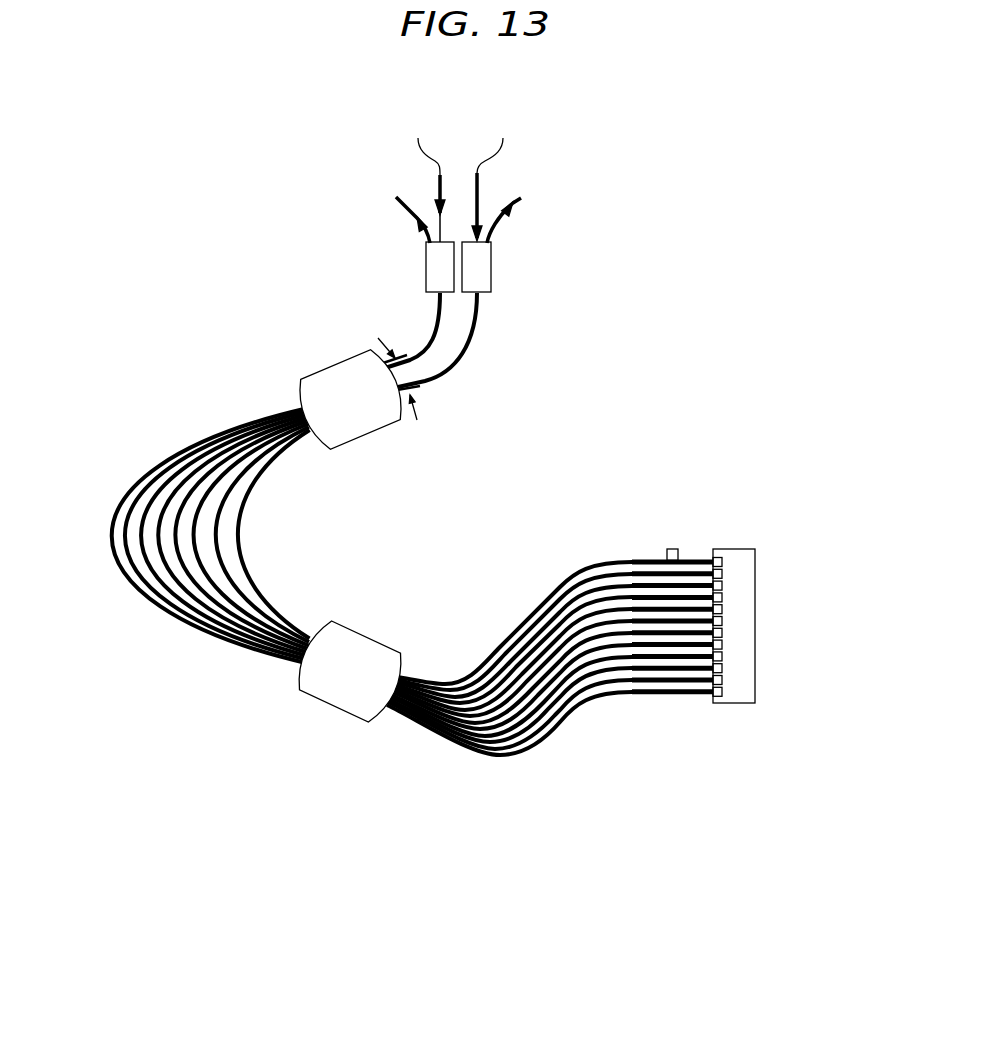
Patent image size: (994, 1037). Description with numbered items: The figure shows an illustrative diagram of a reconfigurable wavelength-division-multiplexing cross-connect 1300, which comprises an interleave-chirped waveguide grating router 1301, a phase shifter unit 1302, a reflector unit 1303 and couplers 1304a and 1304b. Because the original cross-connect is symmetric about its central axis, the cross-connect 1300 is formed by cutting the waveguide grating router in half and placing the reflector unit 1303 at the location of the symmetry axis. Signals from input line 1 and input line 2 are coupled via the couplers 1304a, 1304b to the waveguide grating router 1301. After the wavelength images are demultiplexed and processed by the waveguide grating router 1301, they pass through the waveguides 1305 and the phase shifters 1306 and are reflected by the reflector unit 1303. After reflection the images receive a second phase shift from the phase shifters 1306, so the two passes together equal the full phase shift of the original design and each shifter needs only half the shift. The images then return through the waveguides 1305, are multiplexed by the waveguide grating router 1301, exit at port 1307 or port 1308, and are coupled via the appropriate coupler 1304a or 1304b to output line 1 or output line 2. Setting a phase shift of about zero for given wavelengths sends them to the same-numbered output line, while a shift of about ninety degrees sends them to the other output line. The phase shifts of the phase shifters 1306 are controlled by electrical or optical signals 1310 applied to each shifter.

The reconfigurable WDM cross-connect 1300 is at (768, 857).
The interleave-chirped waveguide grating router 1301 is at (94, 746).
The phase shifter unit 1302 is at (767, 800).
The reflector unit 1303 is at (757, 560).
The coupler 1304a is at (426, 267).
The coupler 1304b is at (491, 267).
The waveguides 1305 is at (412, 658).
The phase shifters 1306 is at (627, 752).
The port 1307 is at (433, 328).
The port 1308 is at (467, 348).
The electrical or optical control signals 1310 is at (672, 549).
The input line 1 is at (340, 400).
The input line 2 is at (339, 671).